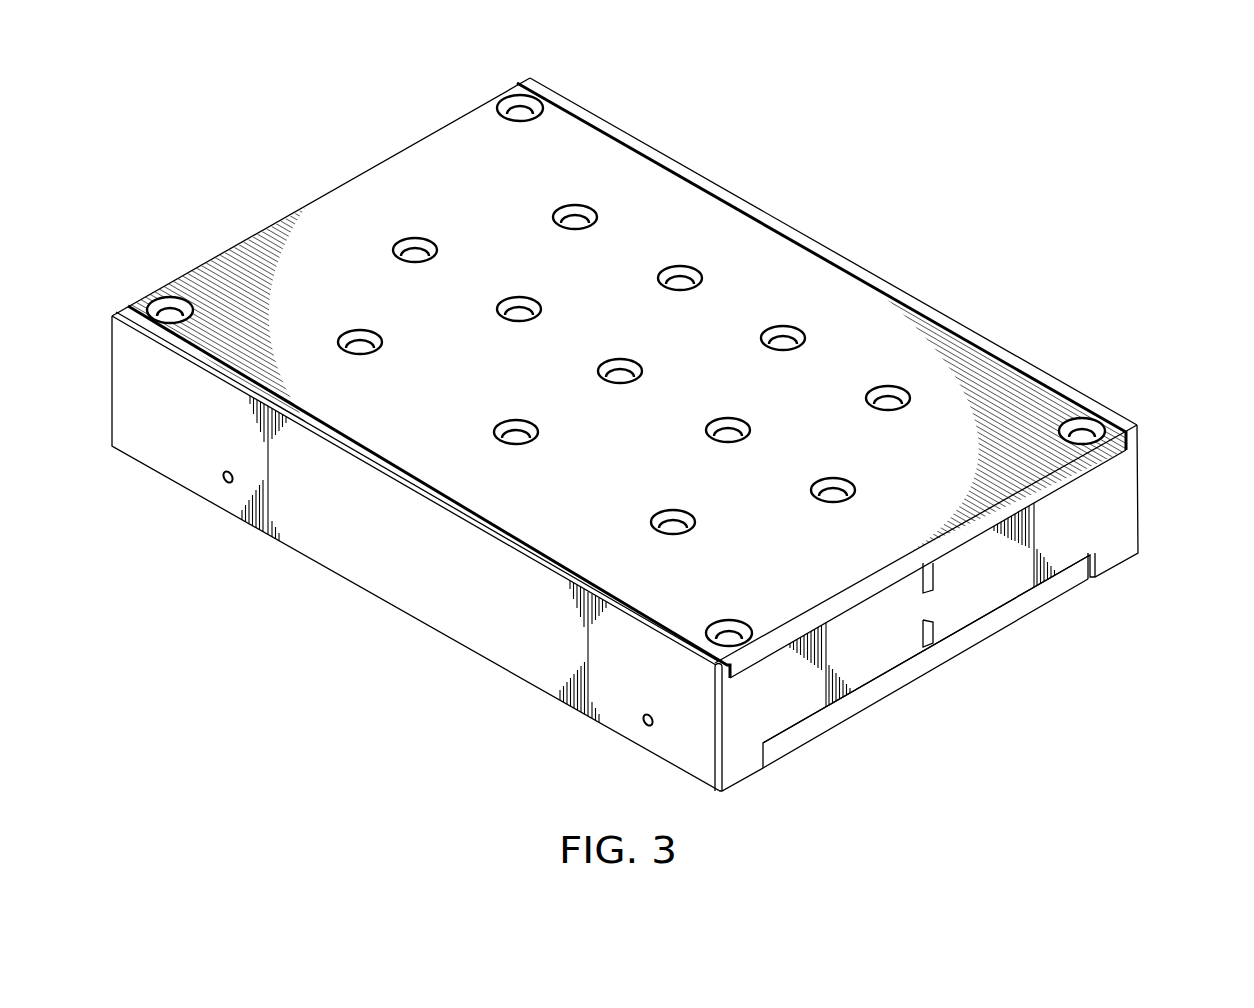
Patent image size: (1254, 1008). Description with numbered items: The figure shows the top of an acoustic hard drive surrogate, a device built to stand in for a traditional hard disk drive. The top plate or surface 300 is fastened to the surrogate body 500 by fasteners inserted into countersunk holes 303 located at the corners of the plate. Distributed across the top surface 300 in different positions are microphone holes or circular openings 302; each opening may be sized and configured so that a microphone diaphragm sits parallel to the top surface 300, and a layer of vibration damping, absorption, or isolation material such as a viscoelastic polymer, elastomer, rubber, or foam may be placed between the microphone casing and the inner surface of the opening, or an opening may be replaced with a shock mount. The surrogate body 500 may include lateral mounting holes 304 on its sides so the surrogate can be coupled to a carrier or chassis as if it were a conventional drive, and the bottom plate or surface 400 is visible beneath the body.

The top surface 300 is at (765, 245).
The circular openings 302 is at (415, 242).
The countersunk holes 303 is at (517, 106).
The side holes 304 is at (225, 481).
The bottom plate 400 is at (967, 638).
The surrogate body 500 is at (1128, 490).